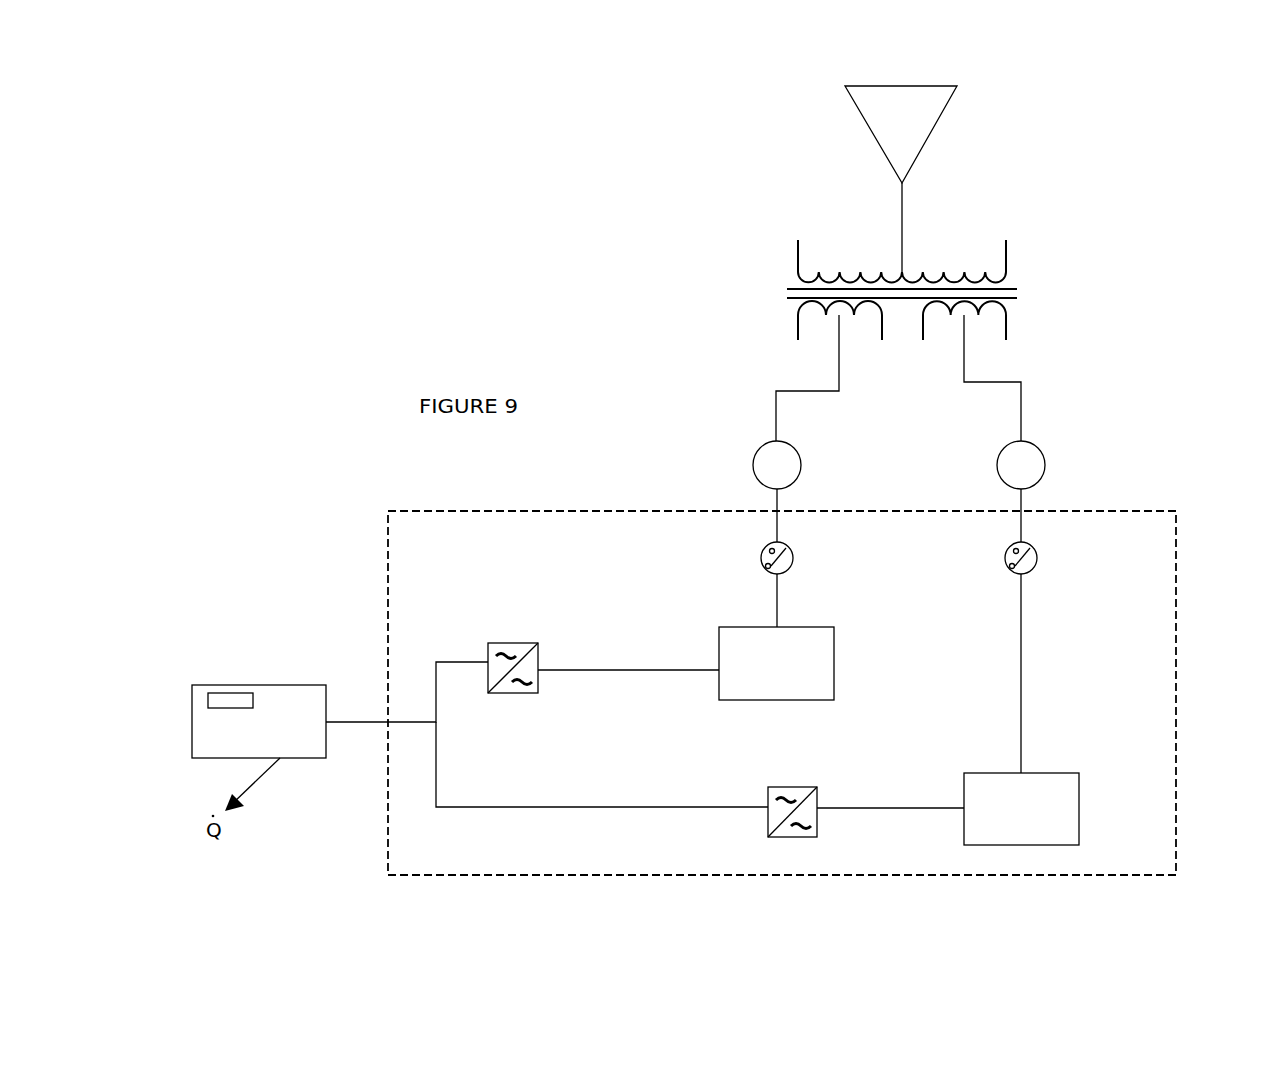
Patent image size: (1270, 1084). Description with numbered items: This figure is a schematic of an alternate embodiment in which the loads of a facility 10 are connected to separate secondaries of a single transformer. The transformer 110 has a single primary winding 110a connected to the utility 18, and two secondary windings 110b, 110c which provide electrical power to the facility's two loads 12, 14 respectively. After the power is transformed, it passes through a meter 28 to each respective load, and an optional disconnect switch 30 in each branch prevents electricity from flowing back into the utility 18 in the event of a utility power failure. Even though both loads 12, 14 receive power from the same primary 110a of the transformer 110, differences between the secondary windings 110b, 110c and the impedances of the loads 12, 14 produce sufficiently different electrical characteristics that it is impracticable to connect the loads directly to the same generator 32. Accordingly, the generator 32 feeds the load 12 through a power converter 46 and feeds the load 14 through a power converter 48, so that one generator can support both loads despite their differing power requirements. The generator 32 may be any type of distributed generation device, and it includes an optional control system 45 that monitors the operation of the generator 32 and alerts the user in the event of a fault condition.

The facility 10 is at (1176, 790).
The load 12 is at (744, 627).
The load 14 is at (1055, 773).
The utility 18 is at (867, 122).
The meter 28 is at (800, 477).
The disconnect switch 30 is at (762, 568).
The generator 32 is at (262, 664).
The control system 45 is at (233, 693).
The power converter 46 is at (517, 643).
The power converter 48 is at (763, 826).
The transformer 110 is at (901, 278).
The primary winding 110a is at (1010, 258).
The secondary winding 110b is at (1006, 330).
The secondary winding 110c is at (798, 325).